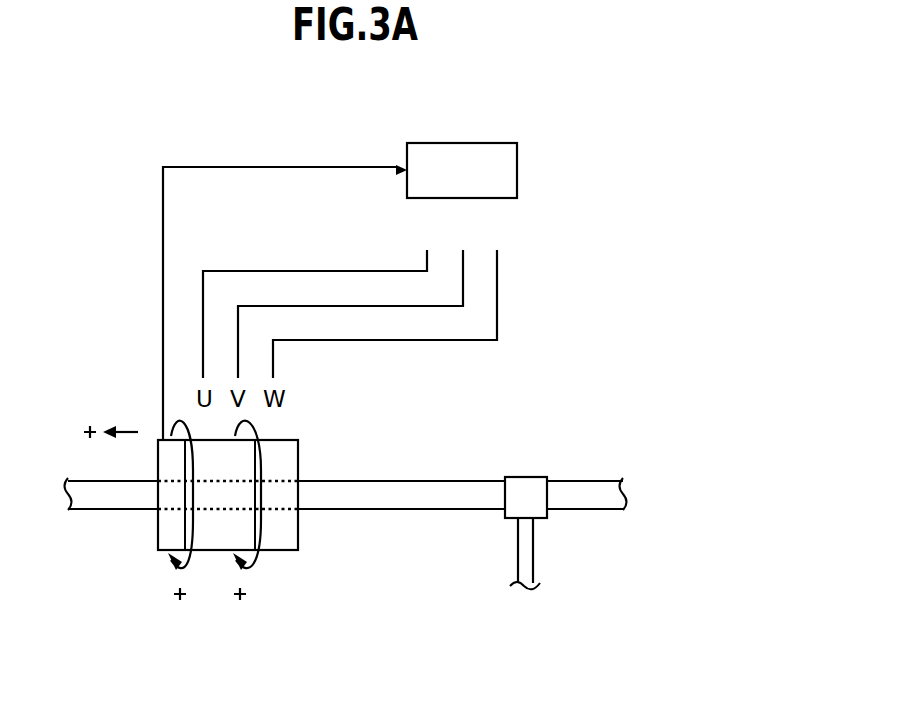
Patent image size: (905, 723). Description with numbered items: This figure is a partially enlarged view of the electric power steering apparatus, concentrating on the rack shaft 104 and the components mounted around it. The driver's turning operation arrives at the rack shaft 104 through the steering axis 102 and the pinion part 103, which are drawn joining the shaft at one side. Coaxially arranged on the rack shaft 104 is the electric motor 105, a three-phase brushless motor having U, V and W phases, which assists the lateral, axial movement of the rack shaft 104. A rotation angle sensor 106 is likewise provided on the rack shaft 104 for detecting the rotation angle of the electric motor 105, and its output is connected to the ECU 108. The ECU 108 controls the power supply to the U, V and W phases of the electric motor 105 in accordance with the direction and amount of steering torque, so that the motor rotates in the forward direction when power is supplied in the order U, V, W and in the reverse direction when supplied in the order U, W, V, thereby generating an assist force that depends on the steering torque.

The steering axis 102 is at (562, 553).
The pinion part 103 is at (520, 477).
The rack shaft 104 is at (420, 481).
The electric motor 105 is at (298, 543).
The rotation angle sensor 106 is at (158, 543).
The ECU 108 is at (506, 121).